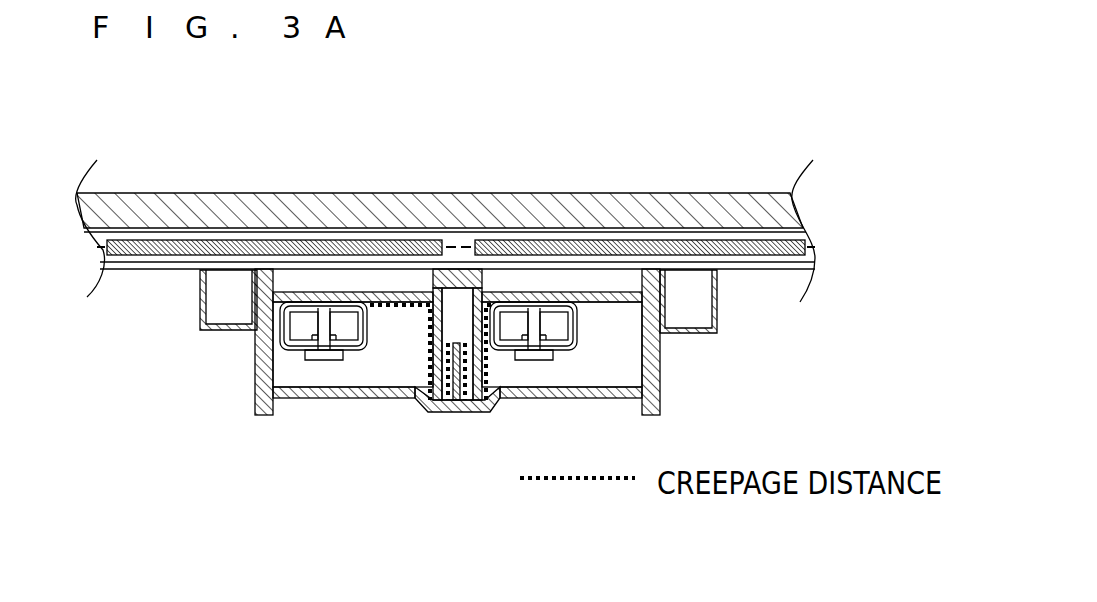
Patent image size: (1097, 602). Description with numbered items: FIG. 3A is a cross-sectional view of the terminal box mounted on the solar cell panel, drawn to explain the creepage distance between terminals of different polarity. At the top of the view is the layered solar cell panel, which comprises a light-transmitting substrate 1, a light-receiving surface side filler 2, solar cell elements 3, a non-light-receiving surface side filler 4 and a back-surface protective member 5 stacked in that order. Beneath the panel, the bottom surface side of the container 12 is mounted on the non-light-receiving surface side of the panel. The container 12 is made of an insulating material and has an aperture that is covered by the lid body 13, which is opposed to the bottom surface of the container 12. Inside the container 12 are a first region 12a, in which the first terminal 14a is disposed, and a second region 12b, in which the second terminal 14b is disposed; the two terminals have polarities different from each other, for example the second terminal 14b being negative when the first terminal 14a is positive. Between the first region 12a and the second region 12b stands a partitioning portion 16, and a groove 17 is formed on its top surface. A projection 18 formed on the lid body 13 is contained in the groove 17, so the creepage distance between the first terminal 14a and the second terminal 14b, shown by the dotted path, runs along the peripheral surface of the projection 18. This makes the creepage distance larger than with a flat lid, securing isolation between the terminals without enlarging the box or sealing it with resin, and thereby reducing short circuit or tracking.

The light-transmitting substrate 1 is at (660, 207).
The light-receiving surface side filler 2 is at (815, 240).
The solar cell element 3 is at (500, 247).
The non-light-receiving surface side filler 4 is at (815, 258).
The back-surface protective member 5 is at (775, 272).
The container 12 is at (257, 402).
The first region 12a is at (568, 368).
The second region 12b is at (310, 370).
The lid body 13 is at (372, 397).
The first terminal 14a is at (573, 340).
The second terminal 14b is at (283, 320).
The partitioning portion 16 is at (433, 293).
The groove 17 is at (455, 290).
The projection 18 is at (437, 423).